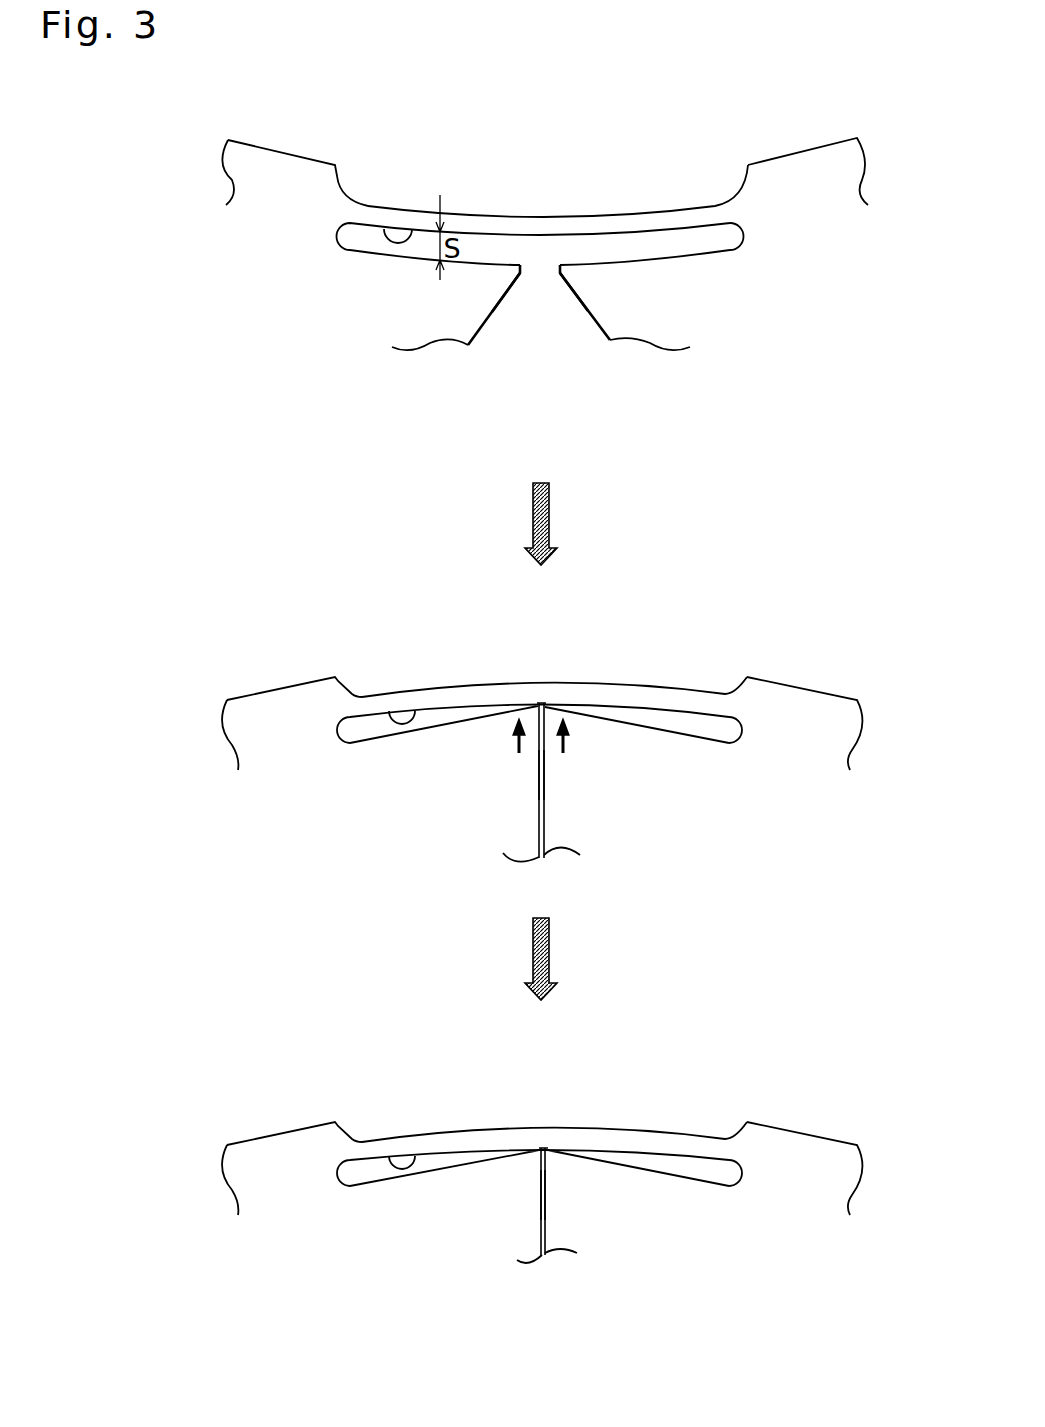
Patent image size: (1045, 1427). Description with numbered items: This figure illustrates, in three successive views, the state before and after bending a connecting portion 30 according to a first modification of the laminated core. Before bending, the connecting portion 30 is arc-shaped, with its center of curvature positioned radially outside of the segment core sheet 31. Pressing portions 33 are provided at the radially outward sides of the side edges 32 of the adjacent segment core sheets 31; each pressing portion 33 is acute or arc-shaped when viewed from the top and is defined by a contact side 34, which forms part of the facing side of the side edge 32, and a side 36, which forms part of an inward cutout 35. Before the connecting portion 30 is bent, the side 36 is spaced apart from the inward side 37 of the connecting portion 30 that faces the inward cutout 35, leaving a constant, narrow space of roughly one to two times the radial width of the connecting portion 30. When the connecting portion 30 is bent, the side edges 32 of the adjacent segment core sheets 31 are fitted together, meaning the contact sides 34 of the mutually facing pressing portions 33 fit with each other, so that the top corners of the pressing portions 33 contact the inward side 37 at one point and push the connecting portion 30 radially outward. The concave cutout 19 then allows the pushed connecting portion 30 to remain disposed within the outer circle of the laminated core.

The concave cutout 19 is at (371, 176).
The connecting portion 30 is at (600, 196).
The segment core sheet 31 is at (388, 303).
The side edge 32 is at (486, 348).
The pressing portion 33 is at (588, 262).
The contact side 34 is at (492, 317).
The inward cutout 35 is at (679, 234).
The side 36 is at (480, 262).
The inward side 37 is at (384, 229).